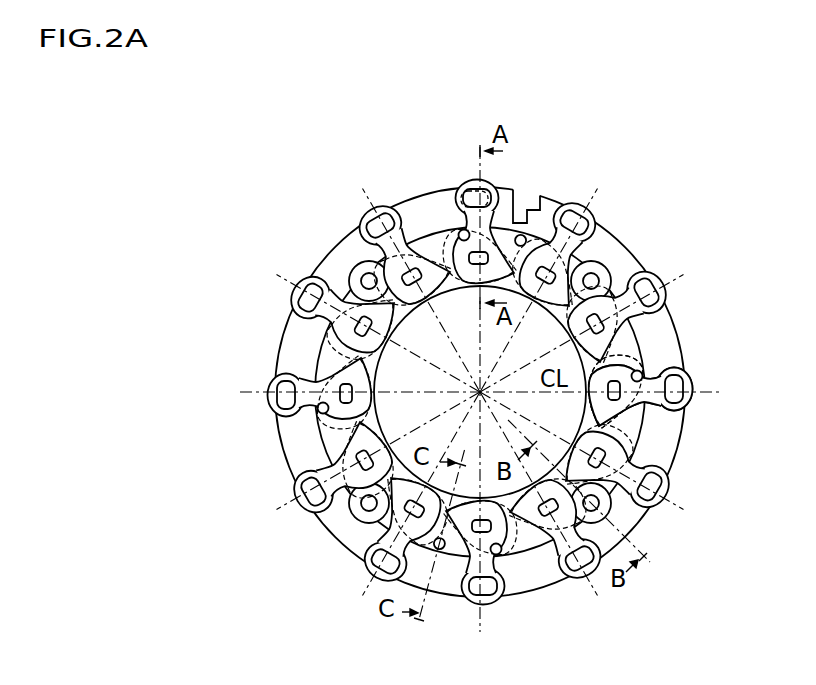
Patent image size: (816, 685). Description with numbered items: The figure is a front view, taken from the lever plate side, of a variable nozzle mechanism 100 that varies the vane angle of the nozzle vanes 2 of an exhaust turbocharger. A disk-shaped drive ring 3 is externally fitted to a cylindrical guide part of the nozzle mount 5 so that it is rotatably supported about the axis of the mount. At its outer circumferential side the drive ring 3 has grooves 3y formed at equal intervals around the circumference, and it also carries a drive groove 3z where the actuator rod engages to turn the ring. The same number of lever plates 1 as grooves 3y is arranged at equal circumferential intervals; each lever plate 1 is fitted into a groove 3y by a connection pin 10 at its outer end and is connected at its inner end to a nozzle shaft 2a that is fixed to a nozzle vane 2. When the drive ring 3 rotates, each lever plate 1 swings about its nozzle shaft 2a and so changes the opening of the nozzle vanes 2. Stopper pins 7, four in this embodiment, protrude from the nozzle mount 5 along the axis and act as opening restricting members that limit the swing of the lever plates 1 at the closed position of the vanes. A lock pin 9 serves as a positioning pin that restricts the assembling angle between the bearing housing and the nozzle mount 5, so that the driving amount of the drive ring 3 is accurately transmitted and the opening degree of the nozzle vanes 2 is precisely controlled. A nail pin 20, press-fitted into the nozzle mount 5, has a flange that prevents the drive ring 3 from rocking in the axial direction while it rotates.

The variable nozzle mechanism 100 is at (603, 141).
The lever plate 1 is at (386, 208).
The nozzle vane 2 is at (324, 346).
The nozzle shaft 2a is at (566, 274).
The drive ring 3 is at (348, 252).
The groove 3y is at (466, 182).
The drive groove 3z is at (531, 207).
The nozzle mount 5 is at (329, 359).
The stopper pin 7 is at (643, 370).
The lock pin 9 is at (526, 236).
The connection pin 10 is at (494, 195).
The nail pin 20 is at (357, 515).